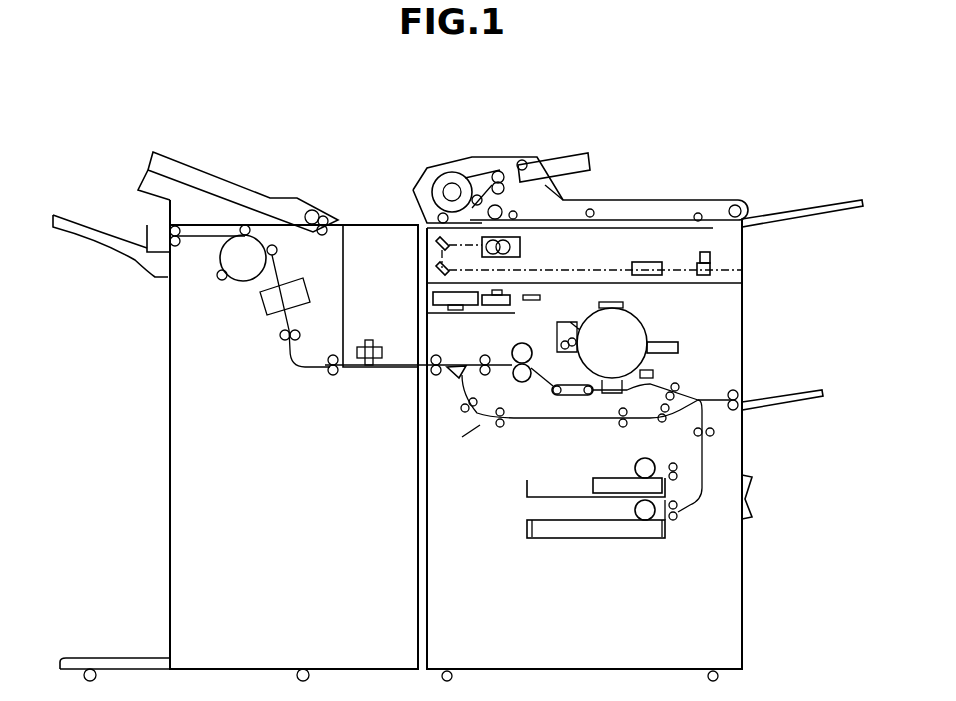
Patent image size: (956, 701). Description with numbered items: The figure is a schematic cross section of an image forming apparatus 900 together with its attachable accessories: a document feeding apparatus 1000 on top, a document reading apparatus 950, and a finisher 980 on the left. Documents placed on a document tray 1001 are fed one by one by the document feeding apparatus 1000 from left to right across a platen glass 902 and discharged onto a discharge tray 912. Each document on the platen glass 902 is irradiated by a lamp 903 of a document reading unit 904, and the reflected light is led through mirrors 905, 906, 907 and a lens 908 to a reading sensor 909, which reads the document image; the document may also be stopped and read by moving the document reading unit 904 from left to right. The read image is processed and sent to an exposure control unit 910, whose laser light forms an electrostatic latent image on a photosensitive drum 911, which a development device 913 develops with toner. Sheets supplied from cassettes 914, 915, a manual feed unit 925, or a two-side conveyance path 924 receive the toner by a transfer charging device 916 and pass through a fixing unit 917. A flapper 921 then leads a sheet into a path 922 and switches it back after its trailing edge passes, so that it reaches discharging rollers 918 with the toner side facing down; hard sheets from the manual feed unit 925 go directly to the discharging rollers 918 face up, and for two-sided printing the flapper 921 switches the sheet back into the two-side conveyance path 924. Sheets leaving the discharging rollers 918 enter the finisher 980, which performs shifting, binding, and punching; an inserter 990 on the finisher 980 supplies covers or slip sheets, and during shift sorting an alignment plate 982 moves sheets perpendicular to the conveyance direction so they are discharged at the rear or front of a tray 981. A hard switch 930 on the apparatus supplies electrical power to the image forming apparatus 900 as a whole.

The image forming apparatus 900 is at (742, 598).
The platen glass 902 is at (663, 232).
The lamp 903 is at (480, 296).
The document reading unit 904 is at (520, 257).
The mirror 905 is at (433, 298).
The mirror 906 is at (440, 243).
The mirror 907 is at (440, 271).
The lens 908 is at (648, 262).
The reading sensor 909 is at (710, 265).
The exposure control unit 910 is at (482, 318).
The photosensitive drum 911 is at (635, 308).
The discharge tray 912 is at (797, 208).
The development device 913 is at (660, 342).
The cassette 914 is at (527, 490).
The cassette 915 is at (527, 530).
The transfer charging device 916 is at (603, 397).
The fixing unit 917 is at (525, 383).
The discharging rollers 918 is at (433, 375).
The flapper 921 is at (455, 367).
The path 922 is at (450, 397).
The two-side conveyance path 924 is at (590, 418).
The manual feed unit 925 is at (785, 405).
The hard switch 930 is at (750, 503).
The document reading apparatus 950 is at (742, 236).
The finisher 980 is at (170, 478).
The tray 981 is at (79, 232).
The alignment plate 982 is at (156, 222).
The inserter 990 is at (203, 166).
The document feeding apparatus 1000 is at (485, 156).
The document tray 1001 is at (588, 153).